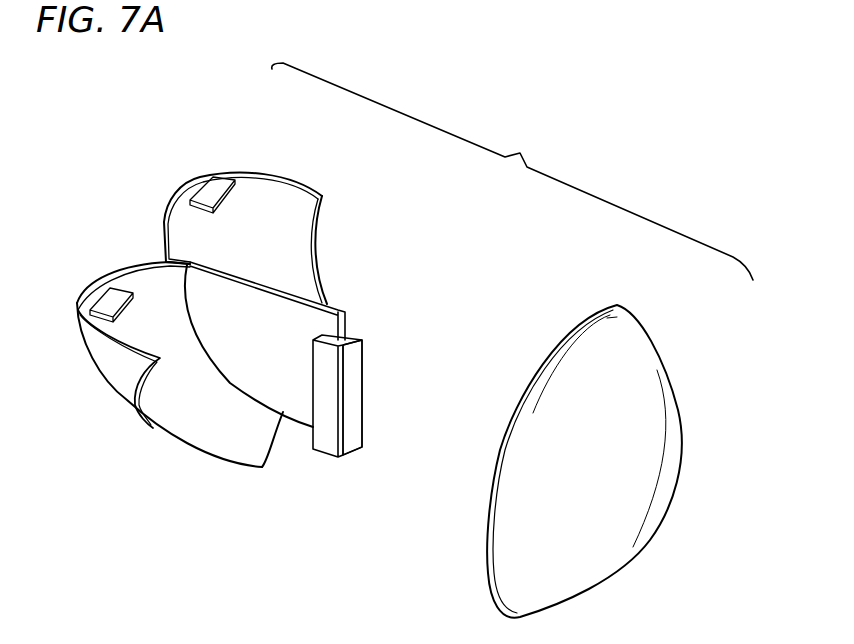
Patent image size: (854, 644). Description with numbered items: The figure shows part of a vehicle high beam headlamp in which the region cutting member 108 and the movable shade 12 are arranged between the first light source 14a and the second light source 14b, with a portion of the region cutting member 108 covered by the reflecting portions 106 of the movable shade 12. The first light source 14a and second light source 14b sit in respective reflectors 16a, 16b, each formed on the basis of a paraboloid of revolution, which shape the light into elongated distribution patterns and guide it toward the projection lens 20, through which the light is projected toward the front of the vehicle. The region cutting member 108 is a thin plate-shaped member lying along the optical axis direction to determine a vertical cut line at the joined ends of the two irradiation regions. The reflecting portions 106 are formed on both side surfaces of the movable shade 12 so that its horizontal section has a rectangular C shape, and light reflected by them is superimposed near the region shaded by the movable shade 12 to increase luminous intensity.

The movable shade 12 is at (353, 432).
The first light source 14a is at (213, 187).
The second light source 14b is at (101, 300).
The reflector 16a is at (273, 193).
The reflector 16b is at (152, 280).
The projection lens 20 is at (652, 468).
The reflecting portions 106 is at (327, 440).
The region cutting member 108 is at (293, 327).